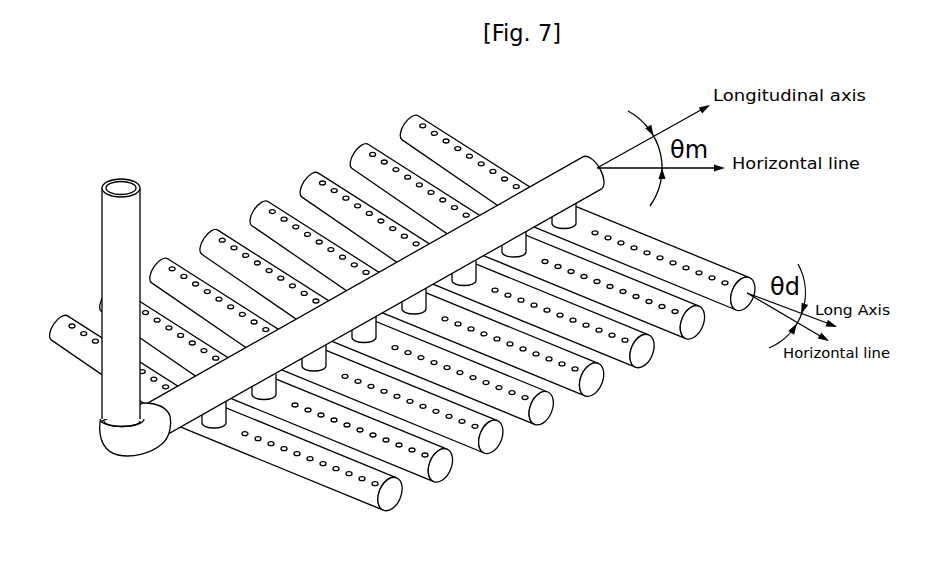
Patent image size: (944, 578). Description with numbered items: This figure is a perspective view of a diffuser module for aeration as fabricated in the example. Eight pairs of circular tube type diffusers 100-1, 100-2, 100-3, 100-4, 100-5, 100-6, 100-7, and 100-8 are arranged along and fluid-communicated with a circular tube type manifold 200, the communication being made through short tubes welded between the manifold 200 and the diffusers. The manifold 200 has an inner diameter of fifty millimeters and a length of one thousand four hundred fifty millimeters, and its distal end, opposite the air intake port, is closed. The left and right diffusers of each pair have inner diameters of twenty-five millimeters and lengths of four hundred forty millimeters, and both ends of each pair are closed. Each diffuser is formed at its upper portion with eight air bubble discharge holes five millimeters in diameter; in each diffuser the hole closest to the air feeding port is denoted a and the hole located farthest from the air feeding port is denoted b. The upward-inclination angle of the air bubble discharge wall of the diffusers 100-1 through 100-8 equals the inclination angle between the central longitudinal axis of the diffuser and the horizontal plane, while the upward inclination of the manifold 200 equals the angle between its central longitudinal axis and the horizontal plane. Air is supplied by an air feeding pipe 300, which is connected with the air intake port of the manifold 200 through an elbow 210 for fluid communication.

The circular tube type diffuser pair 100-1 is at (347, 490).
The circular tube type diffuser pair 100-2 is at (444, 479).
The circular tube type diffuser pair 100-3 is at (495, 450).
The circular tube type diffuser pair 100-4 is at (545, 421).
The circular tube type diffuser pair 100-5 is at (595, 392).
The circular tube type diffuser pair 100-6 is at (646, 362).
The circular tube type diffuser pair 100-7 is at (696, 333).
The circular tube type diffuser pair 100-8 is at (717, 262).
The circular tube type manifold 200 is at (547, 160).
The elbow 210 is at (128, 445).
The air feeding pipe 300 is at (112, 243).
The air discharge hole closest to the air feeding port a is at (243, 434).
The air discharge hole farthest from the air feeding port b is at (376, 507).